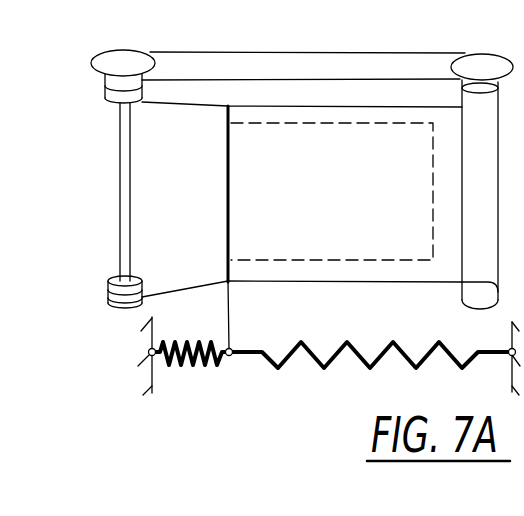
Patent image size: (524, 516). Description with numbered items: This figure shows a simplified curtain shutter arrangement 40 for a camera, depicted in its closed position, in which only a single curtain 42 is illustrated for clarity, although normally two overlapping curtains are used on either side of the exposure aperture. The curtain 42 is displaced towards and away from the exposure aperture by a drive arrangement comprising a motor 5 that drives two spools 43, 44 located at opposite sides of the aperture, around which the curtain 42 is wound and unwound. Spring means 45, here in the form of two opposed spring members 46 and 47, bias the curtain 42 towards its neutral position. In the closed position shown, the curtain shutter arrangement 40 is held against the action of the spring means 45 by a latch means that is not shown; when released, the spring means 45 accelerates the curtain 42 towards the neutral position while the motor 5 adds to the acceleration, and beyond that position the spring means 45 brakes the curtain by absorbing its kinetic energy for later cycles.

The motor 5 is at (481, 59).
The curtain shutter arrangement 40 is at (93, 248).
The curtain 42 is at (313, 284).
The spool 43 is at (462, 298).
The spool 44 is at (108, 306).
The spring means 45 is at (307, 368).
The spring member 46 is at (387, 360).
The spring member 47 is at (187, 367).